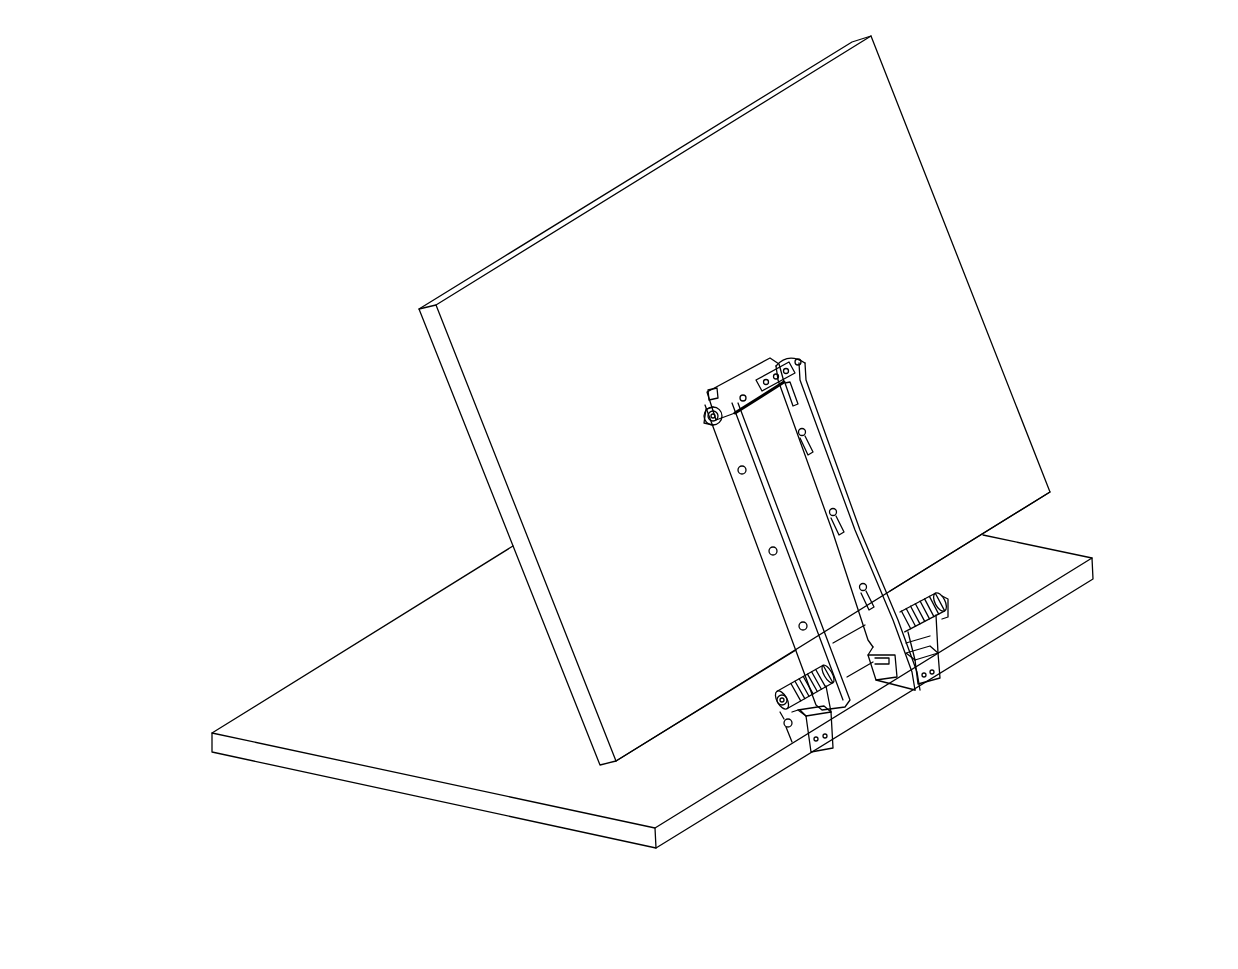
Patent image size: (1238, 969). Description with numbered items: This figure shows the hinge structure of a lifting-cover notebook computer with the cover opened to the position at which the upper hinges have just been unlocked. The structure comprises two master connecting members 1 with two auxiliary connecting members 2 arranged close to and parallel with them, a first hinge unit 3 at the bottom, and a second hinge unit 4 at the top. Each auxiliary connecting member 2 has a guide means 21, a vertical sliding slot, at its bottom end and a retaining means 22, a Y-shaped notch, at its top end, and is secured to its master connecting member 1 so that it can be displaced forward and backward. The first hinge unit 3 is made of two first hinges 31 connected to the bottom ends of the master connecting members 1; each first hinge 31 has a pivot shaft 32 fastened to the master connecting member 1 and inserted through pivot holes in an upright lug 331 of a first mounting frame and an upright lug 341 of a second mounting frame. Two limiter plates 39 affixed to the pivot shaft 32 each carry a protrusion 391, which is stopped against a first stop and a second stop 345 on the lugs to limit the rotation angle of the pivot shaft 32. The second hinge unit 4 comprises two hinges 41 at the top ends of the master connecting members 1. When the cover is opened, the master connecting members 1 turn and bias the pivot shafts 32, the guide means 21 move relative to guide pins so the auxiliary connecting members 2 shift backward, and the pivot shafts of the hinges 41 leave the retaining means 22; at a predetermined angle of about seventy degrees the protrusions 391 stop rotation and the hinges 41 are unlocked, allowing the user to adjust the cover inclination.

The master connecting member 1 is at (760, 522).
The auxiliary connecting member 2 is at (825, 477).
The guide means 21 is at (883, 680).
The retaining means 22 is at (783, 364).
The first hinge unit 3 is at (892, 775).
The first hinge 31 is at (1021, 583).
The pivot shaft 32 is at (876, 665).
The upright lug 331 is at (833, 707).
The upright lug 341 is at (800, 733).
The second stop 345 is at (787, 723).
The limiter plate 39 is at (943, 620).
The protrusion 391 is at (948, 608).
The second hinge unit 4 is at (690, 405).
The hinge 41 is at (690, 430).